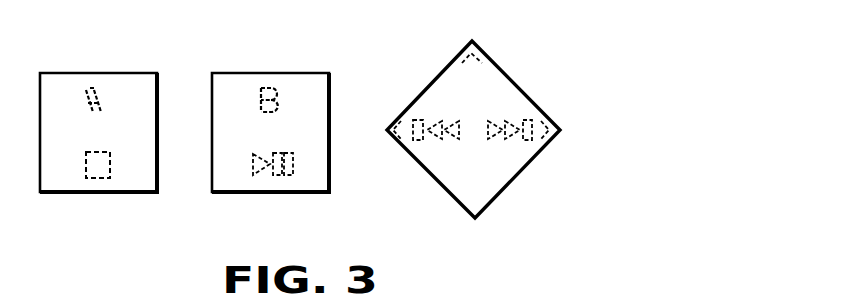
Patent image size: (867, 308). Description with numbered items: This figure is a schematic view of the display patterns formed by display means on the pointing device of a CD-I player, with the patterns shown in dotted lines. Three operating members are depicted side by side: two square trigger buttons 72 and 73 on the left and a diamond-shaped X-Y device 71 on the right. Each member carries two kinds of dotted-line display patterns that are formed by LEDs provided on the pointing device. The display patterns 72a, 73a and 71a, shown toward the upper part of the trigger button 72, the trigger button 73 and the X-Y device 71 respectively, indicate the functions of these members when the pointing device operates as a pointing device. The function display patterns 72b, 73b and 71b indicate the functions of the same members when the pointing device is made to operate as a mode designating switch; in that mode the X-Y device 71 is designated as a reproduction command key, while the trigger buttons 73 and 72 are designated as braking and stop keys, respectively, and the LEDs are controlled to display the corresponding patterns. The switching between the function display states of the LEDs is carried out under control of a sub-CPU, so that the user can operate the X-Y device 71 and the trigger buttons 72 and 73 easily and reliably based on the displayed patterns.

The X-Y device 71 is at (508, 90).
The display pattern 71a is at (487, 192).
The function display pattern 71b is at (460, 142).
The trigger button 72 is at (128, 80).
The display pattern 72a is at (87, 107).
The function display pattern 72b is at (100, 178).
The trigger button 73 is at (303, 81).
The display pattern 73a is at (262, 102).
The function display pattern 73b is at (263, 175).